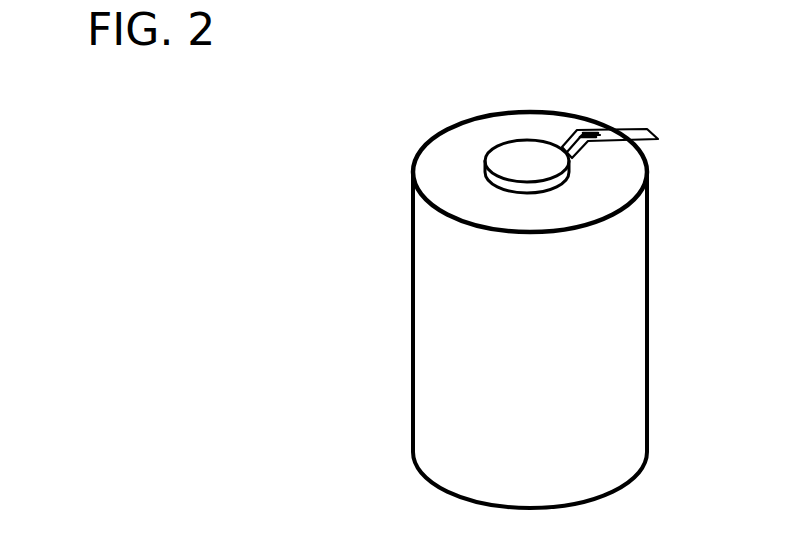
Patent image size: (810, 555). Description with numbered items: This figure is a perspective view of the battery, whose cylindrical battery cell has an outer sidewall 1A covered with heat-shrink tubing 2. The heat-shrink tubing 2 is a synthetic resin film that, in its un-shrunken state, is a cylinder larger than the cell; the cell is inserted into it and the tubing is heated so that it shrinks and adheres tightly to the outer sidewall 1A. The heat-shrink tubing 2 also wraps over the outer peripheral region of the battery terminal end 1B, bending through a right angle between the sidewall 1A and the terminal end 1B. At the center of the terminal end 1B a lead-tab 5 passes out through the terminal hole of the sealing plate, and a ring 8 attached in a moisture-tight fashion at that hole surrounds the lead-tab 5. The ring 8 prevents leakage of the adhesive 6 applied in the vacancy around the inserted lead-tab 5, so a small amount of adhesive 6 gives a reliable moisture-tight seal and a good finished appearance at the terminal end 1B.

The outer sidewall 1A is at (586, 340).
The battery terminal end 1B is at (527, 162).
The heat-shrink tubing 2 is at (635, 415).
The lead-tab 5 is at (636, 128).
The adhesive 6 is at (523, 155).
The ring 8 is at (507, 192).